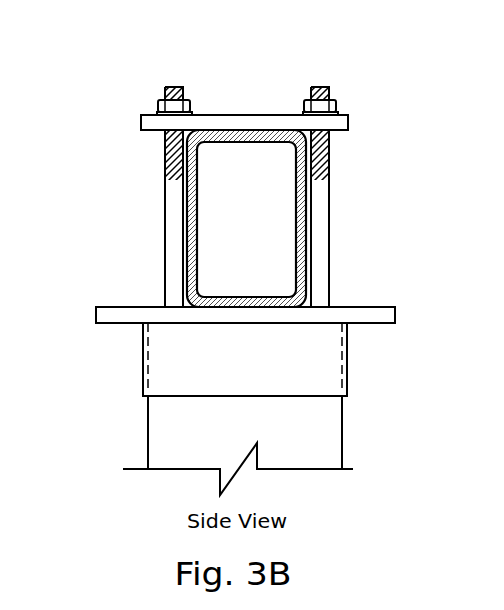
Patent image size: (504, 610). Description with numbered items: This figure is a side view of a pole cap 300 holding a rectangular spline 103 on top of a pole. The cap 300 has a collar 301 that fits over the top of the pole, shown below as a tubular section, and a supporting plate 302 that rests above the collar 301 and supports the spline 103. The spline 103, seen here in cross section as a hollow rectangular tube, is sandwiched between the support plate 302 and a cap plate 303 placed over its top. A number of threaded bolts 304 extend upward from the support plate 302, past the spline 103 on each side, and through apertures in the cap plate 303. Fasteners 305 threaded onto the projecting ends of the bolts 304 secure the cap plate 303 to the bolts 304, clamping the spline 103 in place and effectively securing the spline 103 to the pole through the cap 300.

The pole cap 300 is at (360, 345).
The spline 103 is at (302, 267).
The collar 301 is at (175, 363).
The support plate 302 is at (127, 306).
The cap plate 303 is at (141, 120).
The threaded bolts 304 is at (168, 213).
The fasteners 305 is at (303, 107).